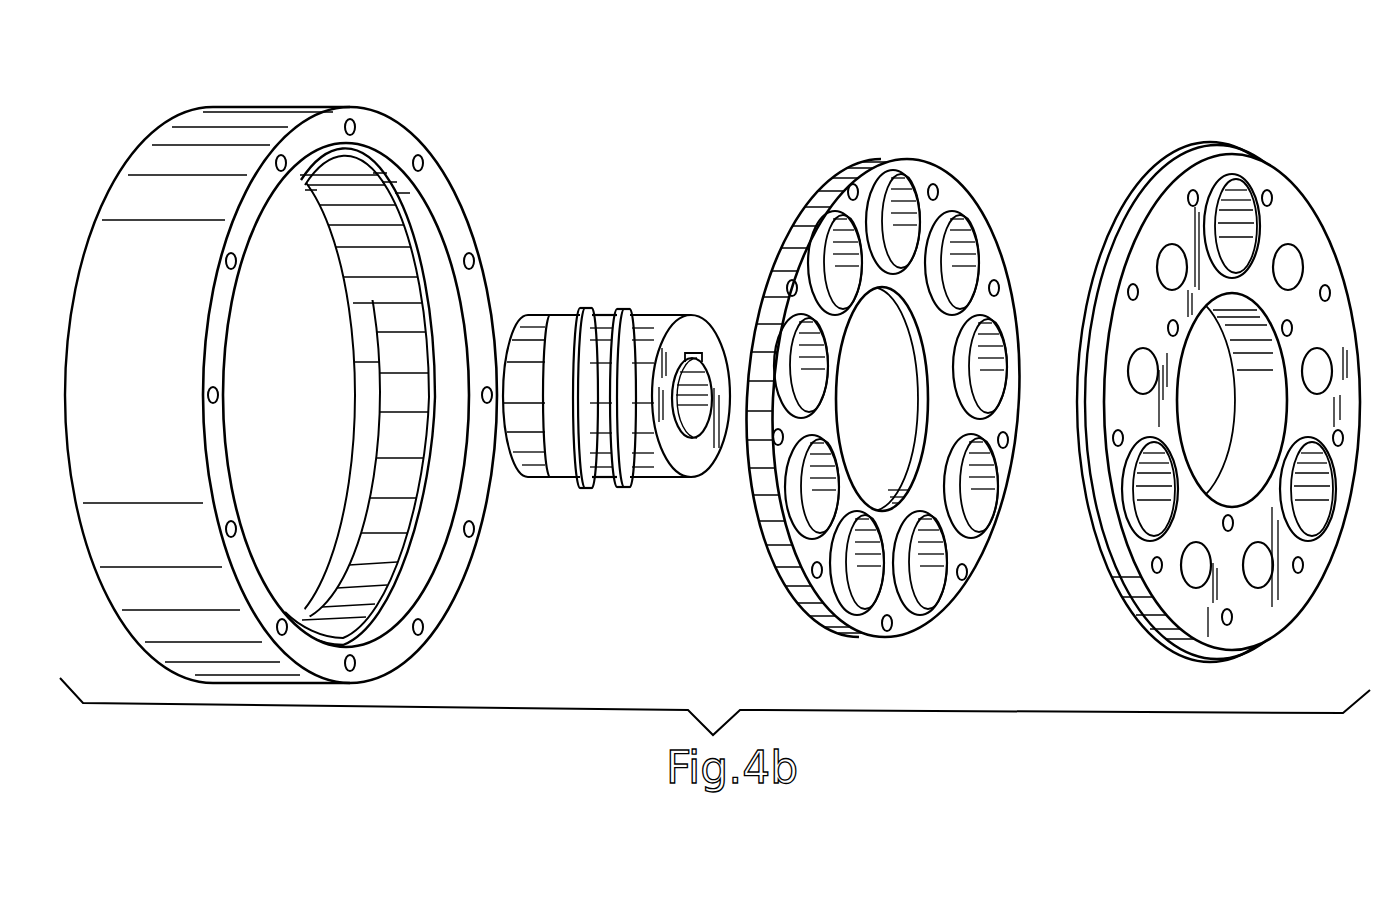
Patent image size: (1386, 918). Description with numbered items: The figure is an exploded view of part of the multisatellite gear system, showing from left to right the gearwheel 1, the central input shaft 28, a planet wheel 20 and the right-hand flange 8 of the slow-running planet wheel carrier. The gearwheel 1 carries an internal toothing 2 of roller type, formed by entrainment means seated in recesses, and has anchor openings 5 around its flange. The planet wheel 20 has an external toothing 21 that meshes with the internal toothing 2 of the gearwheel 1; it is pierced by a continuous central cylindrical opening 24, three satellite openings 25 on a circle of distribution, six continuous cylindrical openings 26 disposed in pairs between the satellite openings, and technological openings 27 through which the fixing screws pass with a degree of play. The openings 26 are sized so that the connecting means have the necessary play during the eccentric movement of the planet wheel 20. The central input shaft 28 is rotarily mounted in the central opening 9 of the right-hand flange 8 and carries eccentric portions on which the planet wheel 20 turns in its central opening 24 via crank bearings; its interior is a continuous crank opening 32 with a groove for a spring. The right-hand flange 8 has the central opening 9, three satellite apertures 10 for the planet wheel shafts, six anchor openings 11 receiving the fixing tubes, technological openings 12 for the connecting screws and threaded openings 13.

The gearwheel 1 is at (118, 163).
The internal toothing 2 is at (391, 290).
The anchor openings 5 is at (469, 260).
The central input shaft 28 is at (658, 311).
The crank opening 32 is at (703, 415).
The planet wheel 20 is at (812, 165).
The external toothing 21 is at (762, 296).
The technological openings 27 is at (764, 300).
The satellite openings 25 is at (905, 229).
The continuous cylindrical openings 26 is at (960, 268).
The central cylindrical opening 24 is at (940, 366).
The right-hand flange 8 is at (1165, 158).
The satellite apertures 10 is at (1239, 252).
The anchor openings 11 is at (1289, 267).
The threaded openings 13 is at (1289, 324).
The technological openings 12 is at (1131, 290).
The central opening 9 is at (1253, 434).